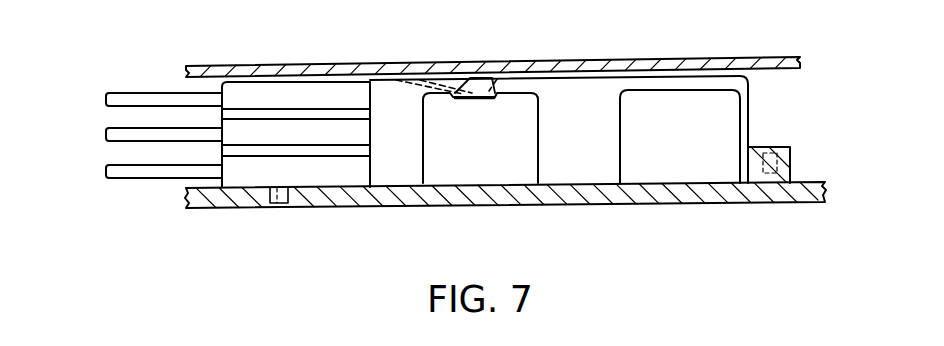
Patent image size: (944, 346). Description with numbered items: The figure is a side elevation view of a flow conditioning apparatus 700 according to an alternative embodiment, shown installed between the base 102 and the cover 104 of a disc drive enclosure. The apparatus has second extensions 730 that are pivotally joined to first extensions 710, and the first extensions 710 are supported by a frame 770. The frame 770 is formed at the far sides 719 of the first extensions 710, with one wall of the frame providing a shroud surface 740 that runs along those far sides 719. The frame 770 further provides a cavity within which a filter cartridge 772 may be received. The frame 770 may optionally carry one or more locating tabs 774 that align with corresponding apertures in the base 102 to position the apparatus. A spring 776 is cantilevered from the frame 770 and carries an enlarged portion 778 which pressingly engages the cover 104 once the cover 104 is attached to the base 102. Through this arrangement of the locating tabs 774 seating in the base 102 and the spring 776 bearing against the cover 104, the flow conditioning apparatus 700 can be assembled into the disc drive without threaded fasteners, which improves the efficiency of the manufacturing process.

The flow conditioning apparatus 700 is at (120, 65).
The base 102 is at (645, 204).
The cover 104 is at (715, 57).
The first extensions 710 is at (222, 150).
The far sides 719 is at (253, 95).
The second extensions 730 is at (106, 172).
The shroud surface 740 is at (367, 174).
The frame 770 is at (748, 94).
The filter cartridge 772 is at (727, 133).
The locating tabs 774 is at (286, 202).
The spring 776 is at (441, 80).
The enlarged portion 778 is at (507, 78).